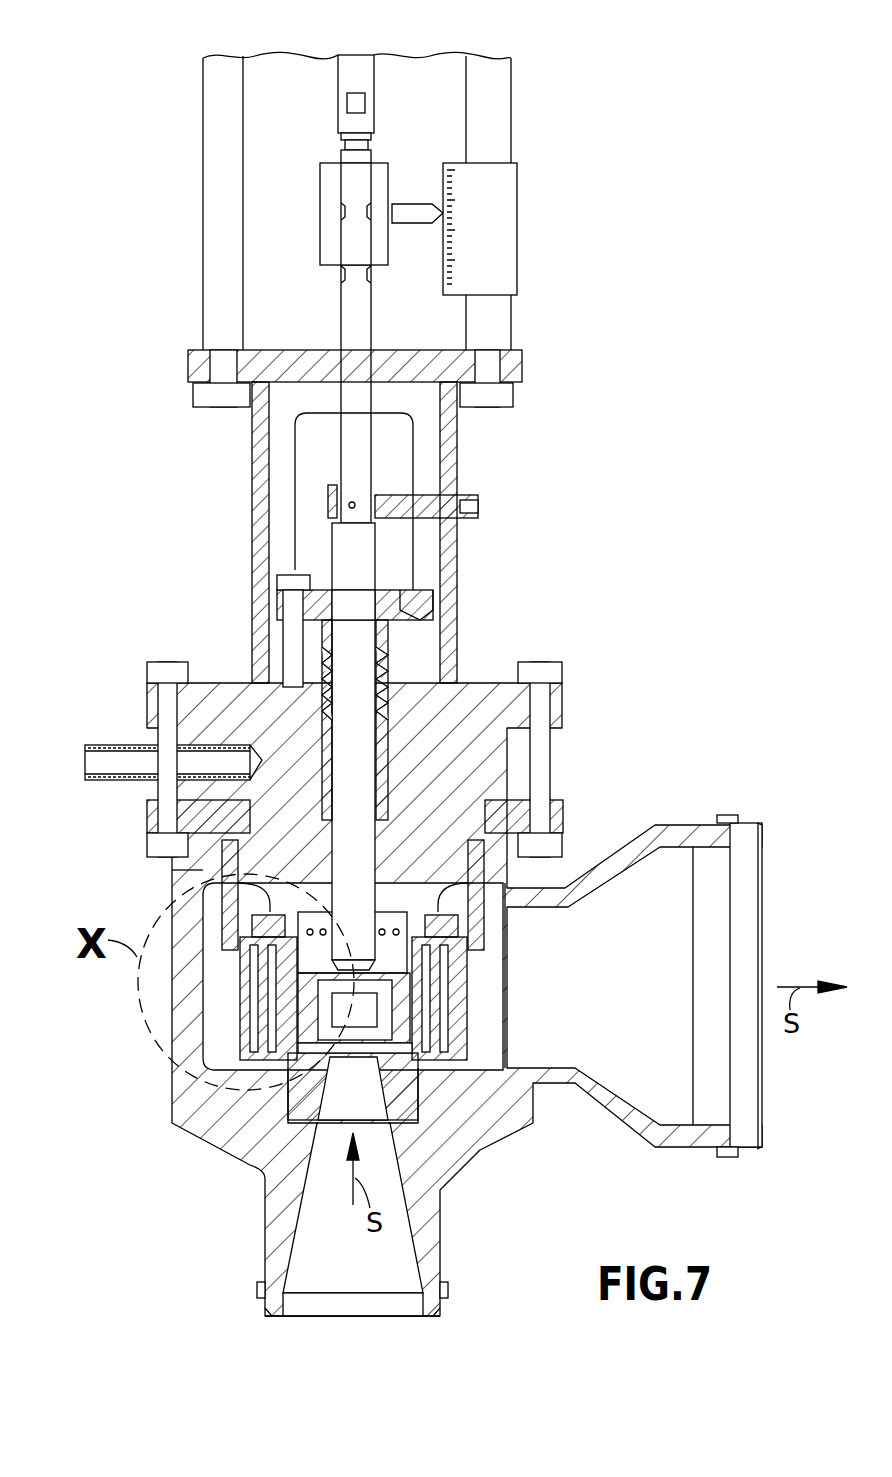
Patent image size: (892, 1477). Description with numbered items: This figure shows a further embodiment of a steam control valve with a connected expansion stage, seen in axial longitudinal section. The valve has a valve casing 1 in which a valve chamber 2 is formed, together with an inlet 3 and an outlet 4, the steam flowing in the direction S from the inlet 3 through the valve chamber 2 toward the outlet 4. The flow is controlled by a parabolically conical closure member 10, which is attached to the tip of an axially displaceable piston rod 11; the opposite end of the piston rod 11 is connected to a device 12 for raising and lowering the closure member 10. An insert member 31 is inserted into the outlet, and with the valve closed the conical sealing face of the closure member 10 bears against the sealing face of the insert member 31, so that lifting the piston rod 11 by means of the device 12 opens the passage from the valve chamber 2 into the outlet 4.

The valve casing 1 is at (172, 1100).
The valve chamber 2 is at (218, 1000).
The inlet 3 is at (315, 1283).
The outlet 4 is at (713, 850).
The closure member 10 is at (290, 1115).
The piston rod 11 is at (345, 695).
The device for raising and lowering the closure member 12 is at (358, 62).
The insert member 31 is at (290, 1097).